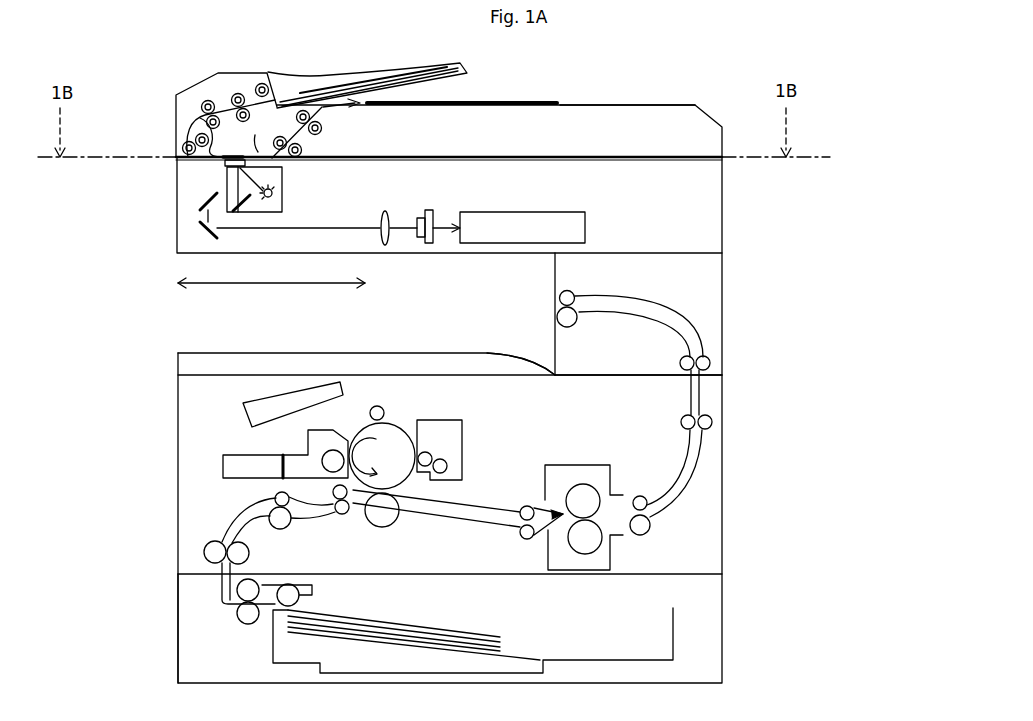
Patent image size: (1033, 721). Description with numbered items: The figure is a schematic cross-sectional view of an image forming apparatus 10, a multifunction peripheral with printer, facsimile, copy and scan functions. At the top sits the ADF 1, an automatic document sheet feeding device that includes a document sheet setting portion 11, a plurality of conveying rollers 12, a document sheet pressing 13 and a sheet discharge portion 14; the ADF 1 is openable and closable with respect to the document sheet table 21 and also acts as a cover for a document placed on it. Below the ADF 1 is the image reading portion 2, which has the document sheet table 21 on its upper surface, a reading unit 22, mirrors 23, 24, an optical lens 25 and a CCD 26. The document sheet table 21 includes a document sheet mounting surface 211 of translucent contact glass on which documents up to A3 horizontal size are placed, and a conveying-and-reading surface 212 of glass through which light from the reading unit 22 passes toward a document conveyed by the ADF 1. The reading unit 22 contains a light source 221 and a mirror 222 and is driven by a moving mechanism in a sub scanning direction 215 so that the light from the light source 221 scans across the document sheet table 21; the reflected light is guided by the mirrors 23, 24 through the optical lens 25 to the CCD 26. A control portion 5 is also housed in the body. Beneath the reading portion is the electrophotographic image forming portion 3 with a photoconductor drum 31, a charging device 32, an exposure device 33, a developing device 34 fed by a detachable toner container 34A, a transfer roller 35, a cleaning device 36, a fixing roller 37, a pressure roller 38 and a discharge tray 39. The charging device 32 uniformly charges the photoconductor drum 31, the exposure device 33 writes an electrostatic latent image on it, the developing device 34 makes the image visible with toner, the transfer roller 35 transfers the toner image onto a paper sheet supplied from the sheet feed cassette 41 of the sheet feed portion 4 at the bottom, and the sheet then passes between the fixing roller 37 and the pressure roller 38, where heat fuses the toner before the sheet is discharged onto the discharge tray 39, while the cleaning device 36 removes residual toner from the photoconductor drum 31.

The image forming apparatus 10 is at (137, 90).
The ADF 1 is at (175, 112).
The document sheet setting portion 11 is at (313, 73).
The conveying rollers 12 is at (205, 100).
The document sheet pressing 13 is at (233, 152).
The sheet discharge portion 14 is at (568, 105).
The image reading portion 2 is at (177, 217).
The document sheet table 21 is at (700, 158).
The document sheet mounting surface 211 is at (416, 160).
The conveying-and-reading surface 212 is at (222, 167).
The sub scanning direction 215 is at (272, 285).
The reading unit 22 is at (283, 198).
The light source 221 is at (285, 180).
The mirror 222 is at (250, 206).
The mirror 23 is at (200, 196).
The mirror 24 is at (200, 236).
The optical lens 25 is at (385, 252).
The CCD 26 is at (430, 252).
The control portion 5 is at (485, 210).
The image forming portion 3 is at (198, 396).
The photoconductor drum 31 is at (402, 425).
The charging device 32 is at (370, 414).
The exposure device 33 is at (243, 420).
The developing device 34 is at (308, 442).
The toner container 34A is at (235, 480).
The transfer roller 35 is at (387, 527).
The cleaning device 36 is at (441, 419).
The fixing roller 37 is at (598, 484).
The pressure roller 38 is at (570, 553).
The discharge tray 39 is at (487, 353).
The sheet feed portion 4 is at (178, 633).
The sheet feed cassette 41 is at (273, 645).